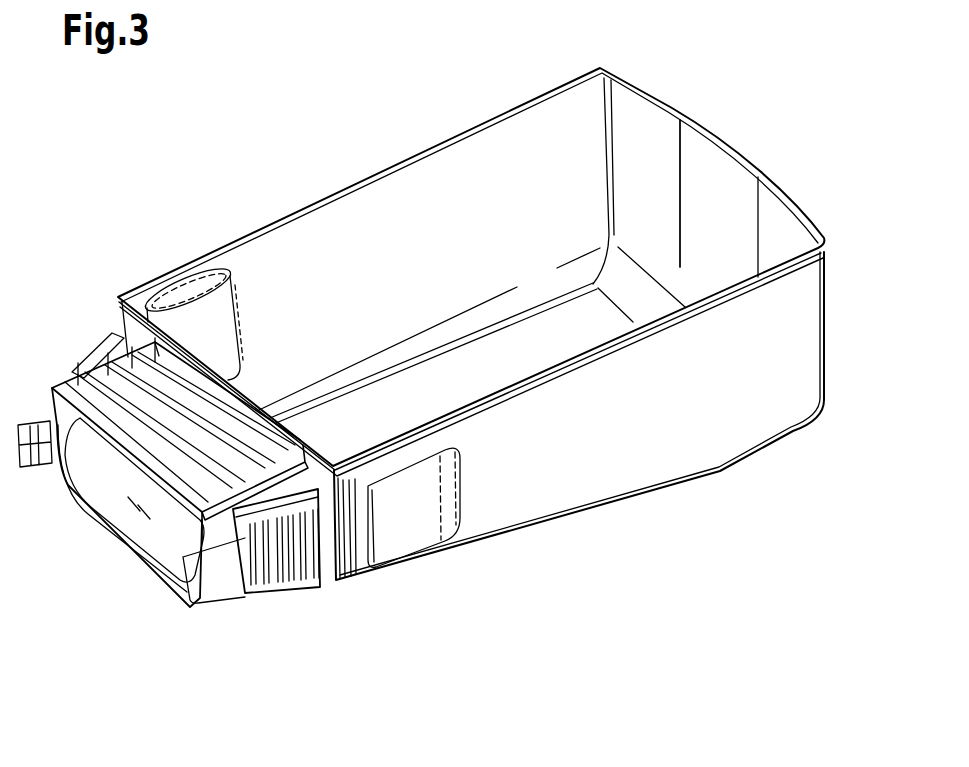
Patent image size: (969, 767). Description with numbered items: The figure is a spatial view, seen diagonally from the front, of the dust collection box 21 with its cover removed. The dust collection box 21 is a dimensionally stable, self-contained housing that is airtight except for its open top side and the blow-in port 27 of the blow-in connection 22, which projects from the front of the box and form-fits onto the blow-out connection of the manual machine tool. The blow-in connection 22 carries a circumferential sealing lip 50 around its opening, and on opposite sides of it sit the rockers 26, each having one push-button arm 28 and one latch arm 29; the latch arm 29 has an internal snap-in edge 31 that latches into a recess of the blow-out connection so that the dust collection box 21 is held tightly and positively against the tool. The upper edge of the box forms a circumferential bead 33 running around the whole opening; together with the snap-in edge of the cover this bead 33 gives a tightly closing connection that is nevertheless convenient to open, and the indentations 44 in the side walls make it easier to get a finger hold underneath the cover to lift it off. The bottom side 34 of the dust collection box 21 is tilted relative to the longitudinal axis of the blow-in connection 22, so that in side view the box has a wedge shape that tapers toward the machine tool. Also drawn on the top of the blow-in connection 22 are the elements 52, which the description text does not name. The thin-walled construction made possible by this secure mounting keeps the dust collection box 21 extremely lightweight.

The dust collection box 21 is at (380, 140).
The blow-in connection 22 is at (143, 567).
The rockers 26 is at (294, 603).
The blow-in port 27 is at (124, 557).
The push-button arm 28 is at (313, 588).
The latch arm 29 is at (187, 600).
The snap-in edge 31 is at (50, 468).
The circumferential bead 33 is at (793, 200).
The bottom side 34 is at (477, 357).
The indentations 44 is at (238, 322).
The circumferential sealing lip 50 is at (133, 500).
The ribs 52 is at (56, 384).